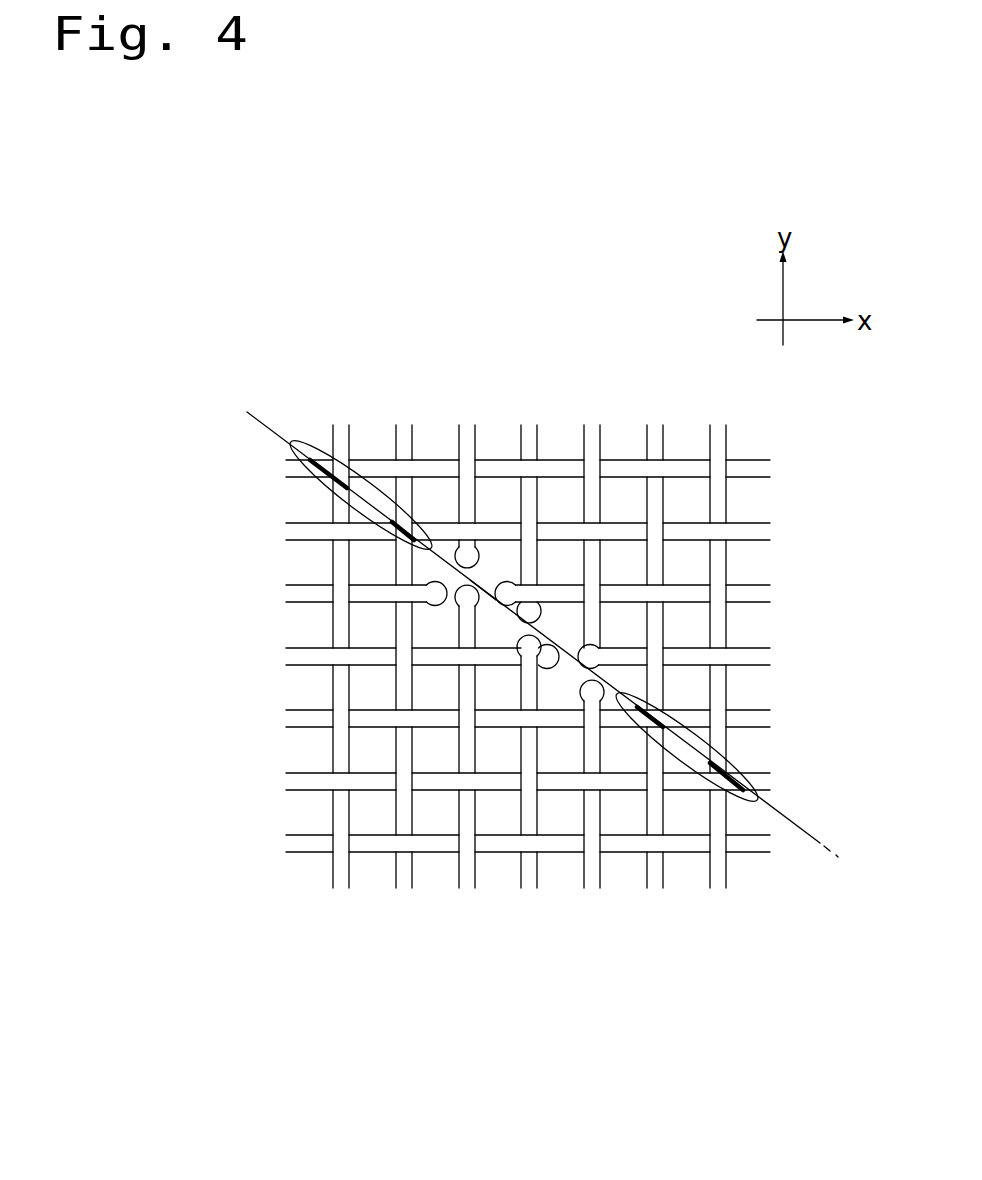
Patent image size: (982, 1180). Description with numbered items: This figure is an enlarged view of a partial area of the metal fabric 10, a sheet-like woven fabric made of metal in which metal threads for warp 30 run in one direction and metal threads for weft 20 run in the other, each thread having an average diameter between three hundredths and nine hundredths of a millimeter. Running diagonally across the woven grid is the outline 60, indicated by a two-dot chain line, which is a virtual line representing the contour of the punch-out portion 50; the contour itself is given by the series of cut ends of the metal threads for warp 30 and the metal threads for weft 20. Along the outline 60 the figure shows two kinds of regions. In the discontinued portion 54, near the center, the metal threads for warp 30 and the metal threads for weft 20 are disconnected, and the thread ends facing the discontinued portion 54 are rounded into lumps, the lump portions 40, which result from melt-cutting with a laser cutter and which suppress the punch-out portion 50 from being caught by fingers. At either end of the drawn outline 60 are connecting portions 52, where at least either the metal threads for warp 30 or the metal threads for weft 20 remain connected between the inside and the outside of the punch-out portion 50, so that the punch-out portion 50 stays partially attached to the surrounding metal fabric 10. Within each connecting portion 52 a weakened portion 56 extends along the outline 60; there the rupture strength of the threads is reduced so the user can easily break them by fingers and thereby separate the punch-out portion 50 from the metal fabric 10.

The metal fabric 10 is at (503, 636).
The metal threads for weft 20 is at (717, 872).
The metal threads for warp 30 is at (758, 528).
The lump portion 40 is at (464, 552).
The punch-out portion 50 is at (570, 653).
The connecting portion 52 is at (313, 440).
The discontinued portion 54 is at (488, 581).
The weakened portion 56 is at (320, 480).
The outline 60 is at (258, 423).